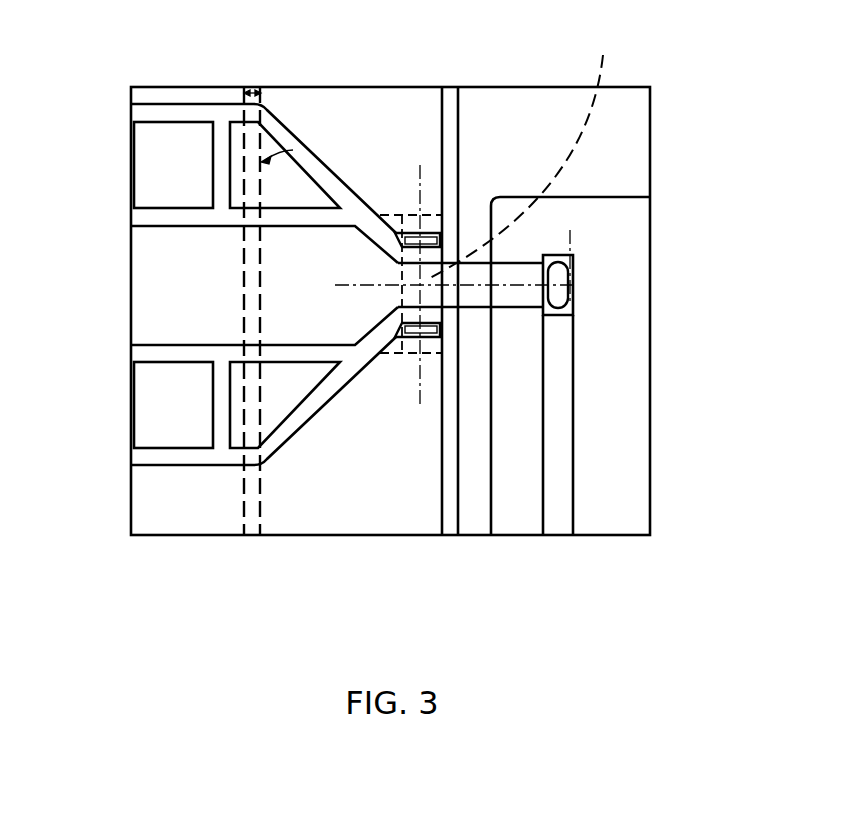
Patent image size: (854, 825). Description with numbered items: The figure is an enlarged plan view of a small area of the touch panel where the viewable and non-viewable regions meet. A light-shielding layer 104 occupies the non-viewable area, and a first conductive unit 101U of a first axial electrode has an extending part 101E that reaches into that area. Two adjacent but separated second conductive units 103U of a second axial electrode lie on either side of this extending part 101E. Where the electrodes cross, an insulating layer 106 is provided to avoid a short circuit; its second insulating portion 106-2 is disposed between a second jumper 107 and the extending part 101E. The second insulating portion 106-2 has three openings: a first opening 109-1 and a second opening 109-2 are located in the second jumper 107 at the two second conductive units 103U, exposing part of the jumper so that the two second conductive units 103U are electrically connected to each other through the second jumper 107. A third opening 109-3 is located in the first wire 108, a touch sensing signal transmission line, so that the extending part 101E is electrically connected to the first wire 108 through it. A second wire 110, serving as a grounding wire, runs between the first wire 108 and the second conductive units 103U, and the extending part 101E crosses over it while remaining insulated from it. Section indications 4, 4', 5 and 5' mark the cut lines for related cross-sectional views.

The first conductive unit 101U is at (140, 266).
The extending part 101E is at (517, 270).
The second conductive unit 103U is at (397, 98).
The light-shielding layer 104 is at (305, 142).
The insulating layer 106 is at (277, 86).
The second insulating portion 106-2 is at (378, 296).
The second jumper 107 is at (527, 150).
The first wire 108 is at (554, 520).
The first opening 109-1 is at (414, 233).
The second opening 109-2 is at (413, 337).
The third opening 109-3 is at (576, 304).
The second wire 110 is at (472, 520).
The section line 4 is at (456, 257).
The section line 4' is at (570, 262).
The section line 5 is at (469, 284).
The section line 5' is at (473, 396).